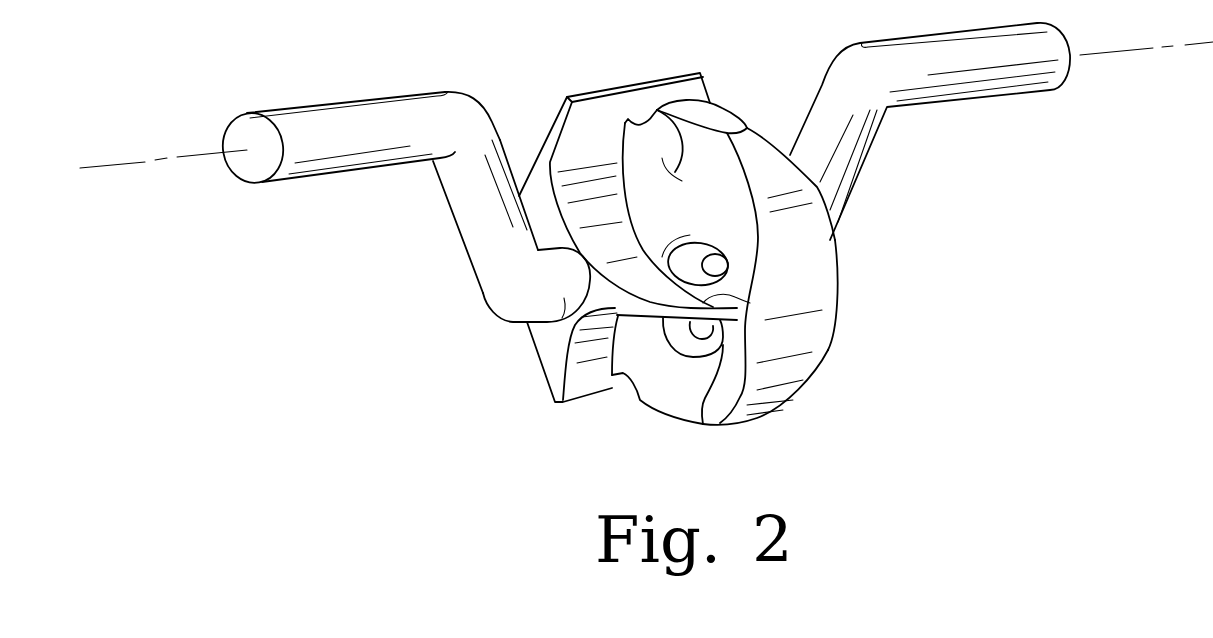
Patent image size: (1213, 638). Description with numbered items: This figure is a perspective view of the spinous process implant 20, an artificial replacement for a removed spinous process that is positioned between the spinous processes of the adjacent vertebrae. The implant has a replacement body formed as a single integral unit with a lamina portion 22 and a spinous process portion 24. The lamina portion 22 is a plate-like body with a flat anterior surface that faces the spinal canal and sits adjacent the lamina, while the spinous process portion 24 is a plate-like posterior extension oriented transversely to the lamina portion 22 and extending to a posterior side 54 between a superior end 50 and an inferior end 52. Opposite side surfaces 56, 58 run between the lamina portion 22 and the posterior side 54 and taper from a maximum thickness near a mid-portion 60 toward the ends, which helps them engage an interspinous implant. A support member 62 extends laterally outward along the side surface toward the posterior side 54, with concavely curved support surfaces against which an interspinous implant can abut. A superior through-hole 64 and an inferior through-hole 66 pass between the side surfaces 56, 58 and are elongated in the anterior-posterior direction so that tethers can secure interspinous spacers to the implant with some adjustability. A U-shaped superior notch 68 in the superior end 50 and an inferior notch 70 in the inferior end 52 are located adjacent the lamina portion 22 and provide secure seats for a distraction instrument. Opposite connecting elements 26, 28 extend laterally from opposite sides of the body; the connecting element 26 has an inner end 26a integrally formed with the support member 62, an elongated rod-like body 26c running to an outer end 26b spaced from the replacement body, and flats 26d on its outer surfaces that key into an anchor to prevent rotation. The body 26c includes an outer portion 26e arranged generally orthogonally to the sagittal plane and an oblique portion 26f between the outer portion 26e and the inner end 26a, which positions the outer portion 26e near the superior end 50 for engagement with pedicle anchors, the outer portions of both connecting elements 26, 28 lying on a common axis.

The spinous process implant 20 is at (408, 431).
The lamina portion 22 is at (548, 135).
The spinous process portion 24 is at (748, 127).
The connecting element 26 is at (335, 203).
The inner end 26a is at (528, 326).
The outer end 26b is at (243, 133).
The body 26c is at (472, 92).
The flats 26d is at (320, 105).
The outer portion 26e is at (377, 157).
The oblique portion 26f is at (470, 207).
The connecting element 28 is at (965, 78).
The superior end 50 is at (722, 117).
The inferior end 52 is at (678, 418).
The posterior side 54 is at (810, 330).
The side surface 56 is at (667, 97).
The side surface 58 is at (838, 287).
The mid-portion 60 is at (807, 270).
The support member 62 is at (740, 302).
The superior through-hole 64 is at (731, 257).
The inferior through-hole 66 is at (703, 424).
The superior notch 68 is at (640, 121).
The inferior notch 70 is at (627, 380).